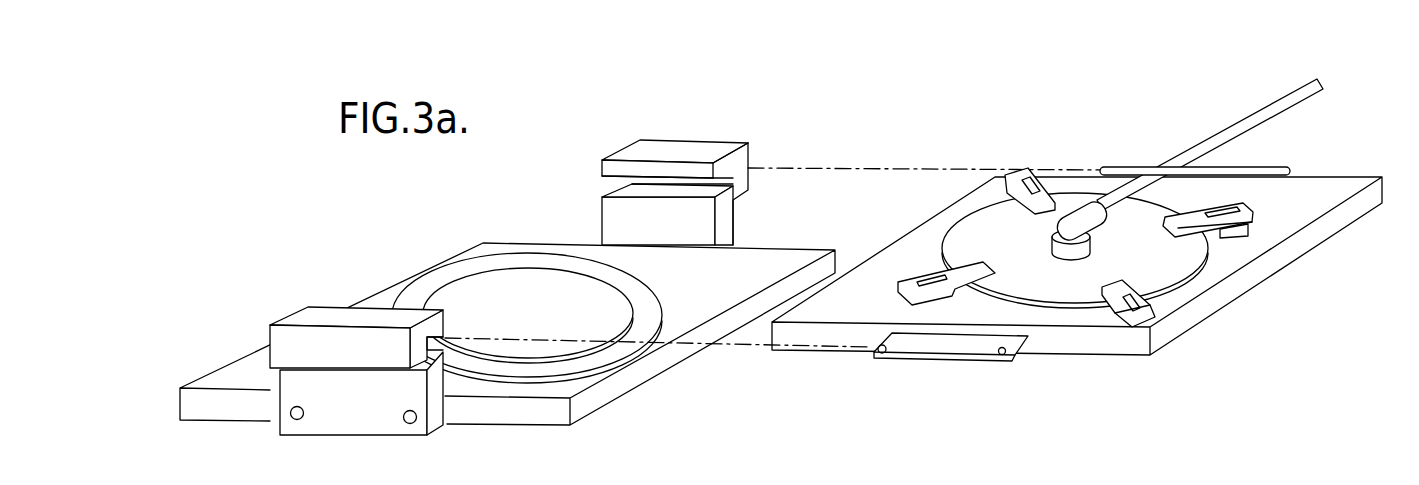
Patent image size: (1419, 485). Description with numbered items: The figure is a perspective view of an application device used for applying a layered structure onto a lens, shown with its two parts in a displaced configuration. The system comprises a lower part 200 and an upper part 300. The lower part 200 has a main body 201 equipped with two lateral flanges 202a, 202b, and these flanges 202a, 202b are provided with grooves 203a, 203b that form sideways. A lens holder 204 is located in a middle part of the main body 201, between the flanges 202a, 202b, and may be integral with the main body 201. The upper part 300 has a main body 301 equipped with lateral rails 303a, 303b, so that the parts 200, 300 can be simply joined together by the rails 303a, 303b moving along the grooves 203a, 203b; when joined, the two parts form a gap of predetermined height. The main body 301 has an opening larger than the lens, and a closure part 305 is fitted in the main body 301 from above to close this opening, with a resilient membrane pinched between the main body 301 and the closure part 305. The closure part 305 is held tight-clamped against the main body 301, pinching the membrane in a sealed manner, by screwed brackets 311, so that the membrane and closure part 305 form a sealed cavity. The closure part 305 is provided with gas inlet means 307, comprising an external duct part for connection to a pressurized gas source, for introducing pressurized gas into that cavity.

The lower part 200 is at (525, 295).
The main body 201 is at (510, 248).
The lens holder 204 is at (453, 273).
The lateral flange 202a is at (702, 155).
The lateral flange 202b is at (312, 320).
The groove 203a is at (610, 183).
The groove 203b is at (440, 348).
The upper part 300 is at (1065, 245).
The main body 301 is at (1293, 217).
The closure part 305 is at (988, 233).
The gas inlet means 307 is at (1250, 122).
The screwed brackets 311 is at (1044, 172).
The lateral rail 303a is at (1260, 170).
The lateral rail 303b is at (948, 352).